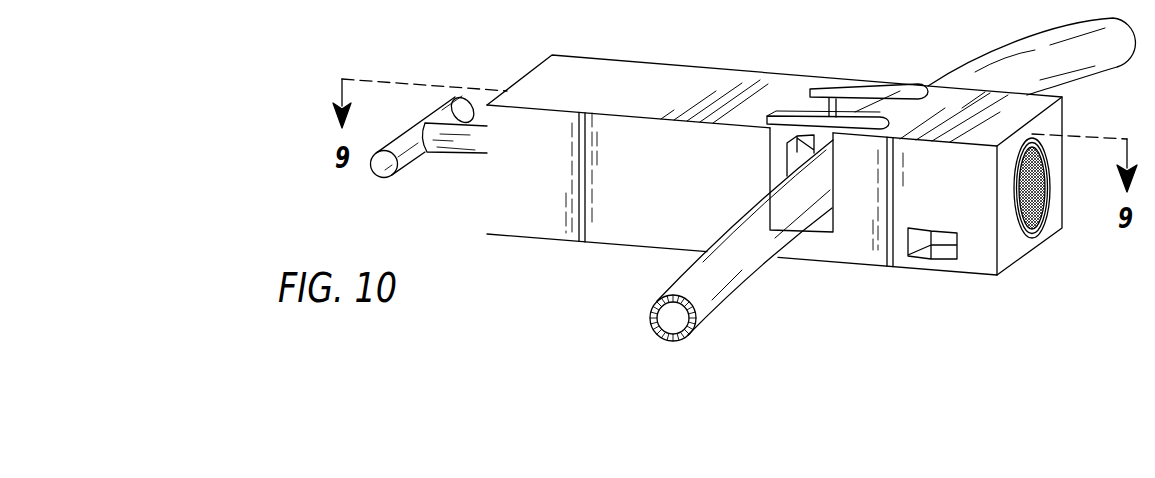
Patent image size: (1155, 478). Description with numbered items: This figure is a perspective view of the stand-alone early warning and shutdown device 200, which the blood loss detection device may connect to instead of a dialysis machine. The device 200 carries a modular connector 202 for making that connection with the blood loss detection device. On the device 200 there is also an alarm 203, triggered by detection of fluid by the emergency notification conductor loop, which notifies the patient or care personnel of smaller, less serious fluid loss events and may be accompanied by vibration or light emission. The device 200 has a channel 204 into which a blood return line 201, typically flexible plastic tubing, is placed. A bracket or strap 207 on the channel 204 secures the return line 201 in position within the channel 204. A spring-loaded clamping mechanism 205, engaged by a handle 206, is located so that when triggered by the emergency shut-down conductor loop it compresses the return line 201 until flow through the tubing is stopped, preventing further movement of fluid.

The early warning and shutdown device 200 is at (356, 201).
The blood return line 201 is at (733, 263).
The modular connector 202 is at (935, 248).
The alarm 203 is at (1040, 220).
The channel 204 is at (774, 160).
The clamping mechanism 205 is at (466, 137).
The handle 206 is at (411, 137).
The bracket or strap 207 is at (828, 117).